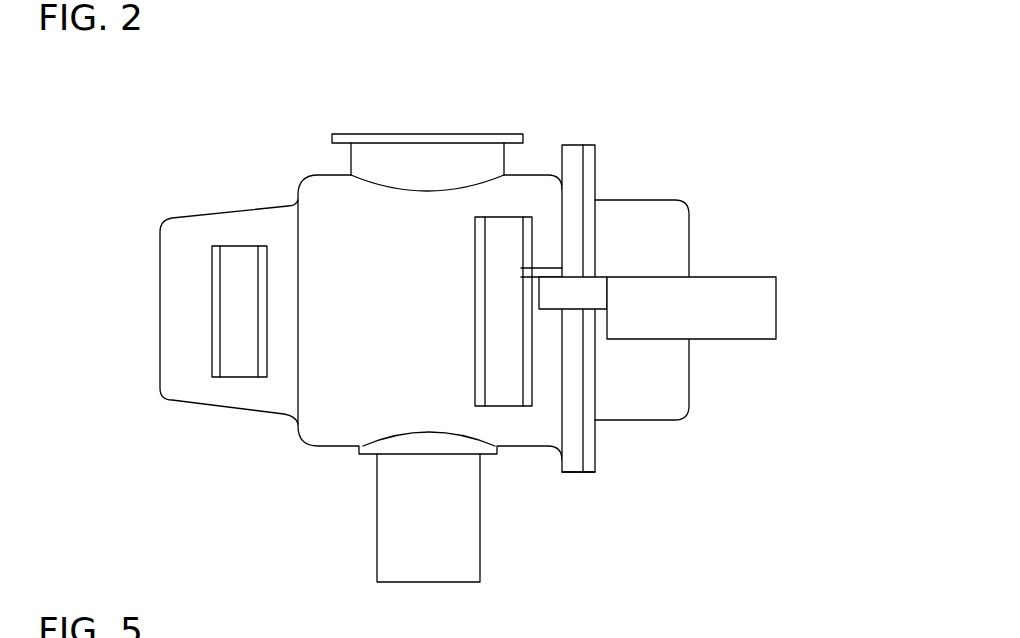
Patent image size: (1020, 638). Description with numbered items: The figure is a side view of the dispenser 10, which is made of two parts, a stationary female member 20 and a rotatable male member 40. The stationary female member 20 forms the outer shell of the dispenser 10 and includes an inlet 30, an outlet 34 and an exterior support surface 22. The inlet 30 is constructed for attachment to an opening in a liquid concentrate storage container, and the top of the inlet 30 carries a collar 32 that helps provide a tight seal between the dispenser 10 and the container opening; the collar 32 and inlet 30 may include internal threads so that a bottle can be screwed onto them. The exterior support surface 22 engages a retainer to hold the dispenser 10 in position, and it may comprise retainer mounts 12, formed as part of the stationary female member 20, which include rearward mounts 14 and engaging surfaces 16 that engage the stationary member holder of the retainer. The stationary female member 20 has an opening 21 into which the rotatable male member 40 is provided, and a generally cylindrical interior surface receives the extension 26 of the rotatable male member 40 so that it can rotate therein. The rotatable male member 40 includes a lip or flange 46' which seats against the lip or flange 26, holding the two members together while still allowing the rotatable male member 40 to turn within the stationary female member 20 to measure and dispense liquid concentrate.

The dispenser 10 is at (692, 143).
The retainer mounts 12 is at (212, 377).
The rearward mounts 14 is at (212, 308).
The engaging surfaces 16 is at (242, 255).
The stationary female member 20 is at (323, 190).
The opening 21 is at (633, 450).
The exterior support surface 22 is at (340, 437).
The extension 26 is at (565, 473).
The inlet 30 is at (504, 157).
The collar 32 is at (340, 137).
The outlet 34 is at (480, 582).
The rotatable male member 40 is at (660, 252).
The lip or flange 46' is at (627, 500).